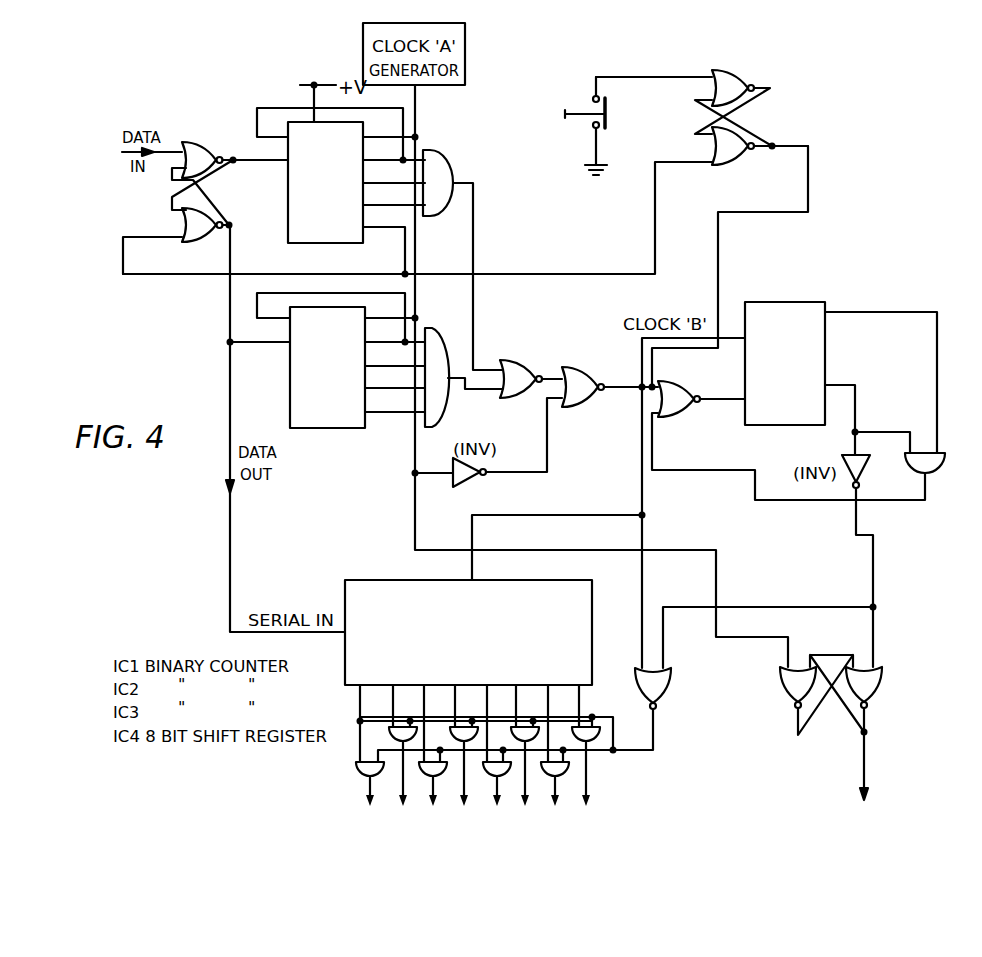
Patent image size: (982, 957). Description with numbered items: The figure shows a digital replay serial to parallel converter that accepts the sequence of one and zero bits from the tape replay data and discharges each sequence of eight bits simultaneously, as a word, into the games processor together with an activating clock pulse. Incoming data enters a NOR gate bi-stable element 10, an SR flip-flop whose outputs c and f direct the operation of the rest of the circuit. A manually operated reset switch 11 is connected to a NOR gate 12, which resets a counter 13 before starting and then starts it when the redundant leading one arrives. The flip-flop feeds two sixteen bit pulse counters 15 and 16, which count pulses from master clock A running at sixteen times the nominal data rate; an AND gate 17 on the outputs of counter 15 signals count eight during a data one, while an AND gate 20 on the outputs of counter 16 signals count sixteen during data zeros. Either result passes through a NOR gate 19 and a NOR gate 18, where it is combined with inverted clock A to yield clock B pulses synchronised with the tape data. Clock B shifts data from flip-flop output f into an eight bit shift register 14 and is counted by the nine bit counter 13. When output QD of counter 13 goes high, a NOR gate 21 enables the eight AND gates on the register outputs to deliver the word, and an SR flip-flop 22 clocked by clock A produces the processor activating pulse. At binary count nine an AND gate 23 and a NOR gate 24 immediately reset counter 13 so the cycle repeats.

The NOR gate bi-stable element 10 is at (221, 150).
The reset switch 11 is at (628, 76).
The NOR gate 12 is at (770, 88).
The counter 13 is at (785, 302).
The shift register 14 is at (372, 578).
The pulse counter 15 is at (287, 223).
The pulse counter 16 is at (327, 429).
The AND gate 17 is at (442, 217).
The NOR gate 18 is at (577, 407).
The NOR gate 19 is at (518, 396).
The AND gate 20 is at (447, 348).
The NOR gate 21 is at (663, 692).
The NOR gate SR flip-flop 22 is at (873, 692).
The AND gate 23 is at (909, 462).
The NOR gate 24 is at (672, 418).